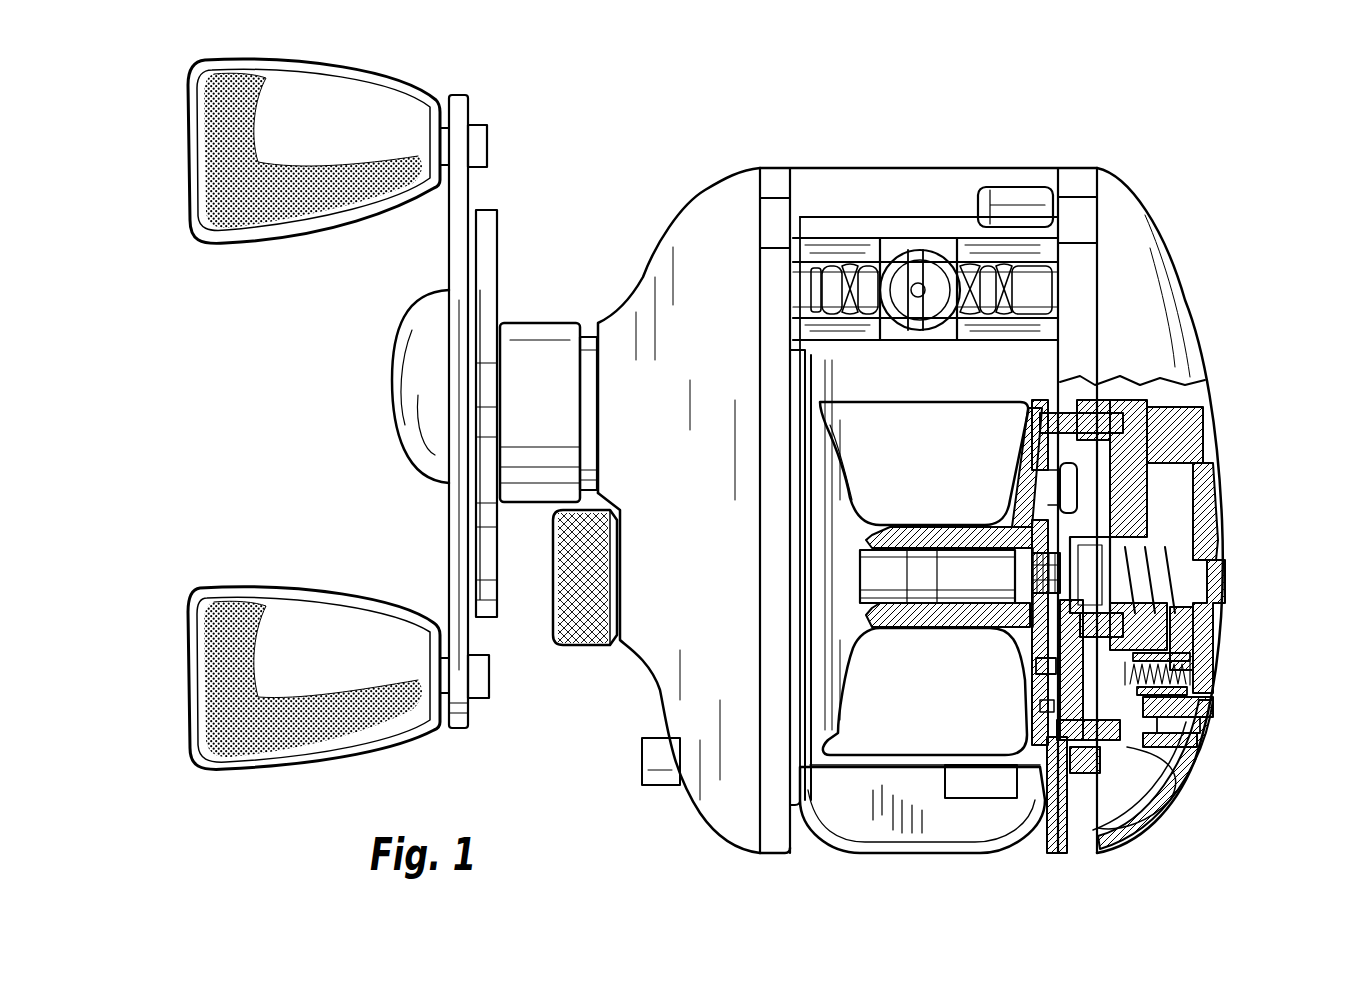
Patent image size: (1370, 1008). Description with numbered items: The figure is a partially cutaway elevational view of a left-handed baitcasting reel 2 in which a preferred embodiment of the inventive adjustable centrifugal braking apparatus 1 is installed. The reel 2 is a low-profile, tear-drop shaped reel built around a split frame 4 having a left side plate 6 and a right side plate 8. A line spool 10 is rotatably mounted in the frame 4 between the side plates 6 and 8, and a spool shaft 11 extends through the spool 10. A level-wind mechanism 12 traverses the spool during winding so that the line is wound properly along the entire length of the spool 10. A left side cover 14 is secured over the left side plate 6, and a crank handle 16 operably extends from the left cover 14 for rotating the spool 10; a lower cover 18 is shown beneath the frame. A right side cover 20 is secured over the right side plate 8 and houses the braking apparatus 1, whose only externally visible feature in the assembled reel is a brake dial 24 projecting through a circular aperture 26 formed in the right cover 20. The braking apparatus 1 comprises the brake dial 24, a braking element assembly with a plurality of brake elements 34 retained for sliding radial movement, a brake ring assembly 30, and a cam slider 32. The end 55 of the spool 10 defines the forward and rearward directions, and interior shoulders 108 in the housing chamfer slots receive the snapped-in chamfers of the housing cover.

The braking apparatus 1 is at (1255, 569).
The baitcasting reel 2 is at (933, 493).
The split frame 4 is at (780, 175).
The left side plate 6 is at (775, 845).
The right side plate 8 is at (1058, 838).
The line spool 10 is at (916, 575).
The spool shaft 11 is at (962, 597).
The level-wind mechanism 12 is at (922, 240).
The left side cover 14 is at (690, 235).
The crank handle 16 is at (455, 250).
The lower cover 18 is at (940, 830).
The right side cover 20 is at (1160, 280).
The brake dial 24 is at (1215, 505).
The circular aperture 26 is at (1030, 510).
The brake ring assembly 30 is at (1130, 742).
The cam slider 32 is at (1195, 660).
The brake elements 34 is at (1040, 465).
The end of line spool 55 is at (1020, 720).
The interior shoulders 108 is at (1030, 495).